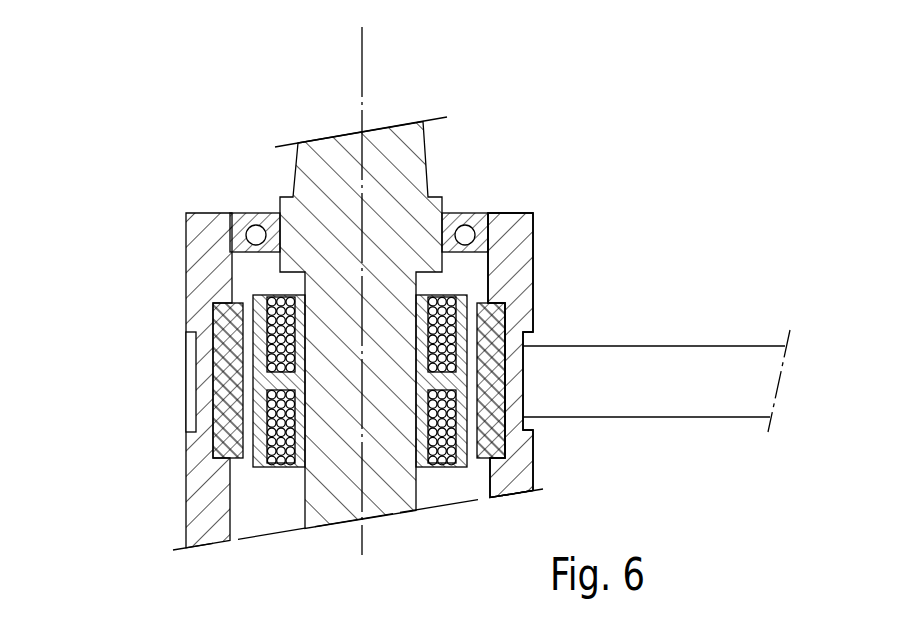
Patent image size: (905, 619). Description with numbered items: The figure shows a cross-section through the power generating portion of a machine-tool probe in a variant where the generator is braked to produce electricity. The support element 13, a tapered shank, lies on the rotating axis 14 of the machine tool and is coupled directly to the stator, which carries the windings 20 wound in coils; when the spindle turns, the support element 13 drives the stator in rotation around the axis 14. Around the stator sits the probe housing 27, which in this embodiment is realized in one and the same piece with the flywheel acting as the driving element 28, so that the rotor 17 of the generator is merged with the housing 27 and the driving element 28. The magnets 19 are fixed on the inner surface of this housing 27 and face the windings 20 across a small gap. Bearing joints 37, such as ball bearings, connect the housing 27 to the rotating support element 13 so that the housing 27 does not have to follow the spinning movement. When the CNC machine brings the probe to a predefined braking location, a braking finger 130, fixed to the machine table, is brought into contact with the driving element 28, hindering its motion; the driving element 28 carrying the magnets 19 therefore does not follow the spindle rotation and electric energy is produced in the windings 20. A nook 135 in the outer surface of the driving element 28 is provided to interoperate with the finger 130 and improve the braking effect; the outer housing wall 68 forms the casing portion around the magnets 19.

The support element 13 is at (407, 153).
The rotating axis of the machine tool 14 is at (360, 75).
The rotor of the generator 17 is at (510, 355).
The magnets 19 is at (498, 317).
The windings 20 is at (447, 437).
The probe housing 27 is at (507, 257).
The driving element 28 is at (510, 355).
The bearing joint 37 is at (256, 235).
The housing wall 68 is at (210, 498).
The braking finger 130 is at (712, 393).
The nook 135 is at (188, 357).